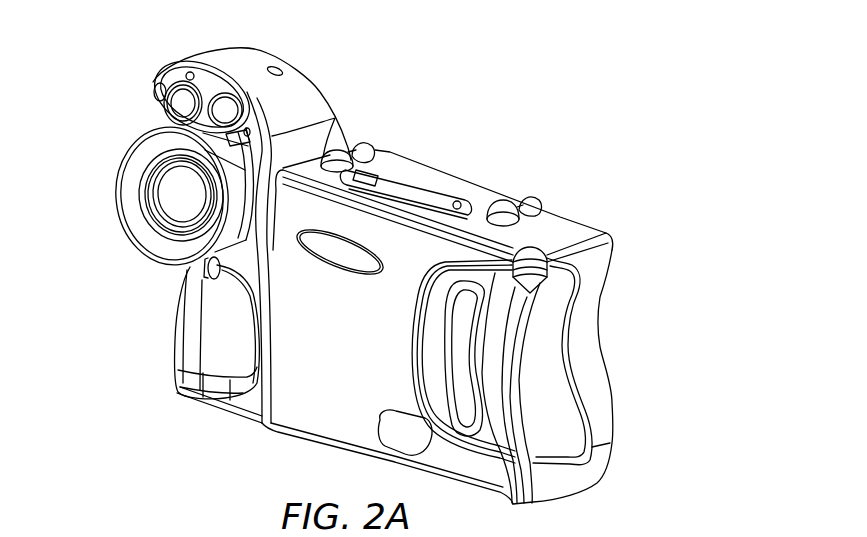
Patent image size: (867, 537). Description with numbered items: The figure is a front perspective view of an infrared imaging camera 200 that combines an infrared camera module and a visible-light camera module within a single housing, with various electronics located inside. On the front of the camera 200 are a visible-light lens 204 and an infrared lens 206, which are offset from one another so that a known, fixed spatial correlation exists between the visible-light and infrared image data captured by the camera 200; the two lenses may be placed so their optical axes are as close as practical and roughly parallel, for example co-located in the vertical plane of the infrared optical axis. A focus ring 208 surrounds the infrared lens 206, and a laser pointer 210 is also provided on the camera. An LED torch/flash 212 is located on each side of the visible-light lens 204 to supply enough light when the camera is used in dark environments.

The infrared imaging camera 200 is at (632, 235).
The visible-light lens 204 is at (180, 100).
The infrared lens 206 is at (183, 188).
The focus ring 208 is at (128, 198).
The laser pointer 210 is at (195, 72).
The LED torch/flash 212 is at (158, 84).